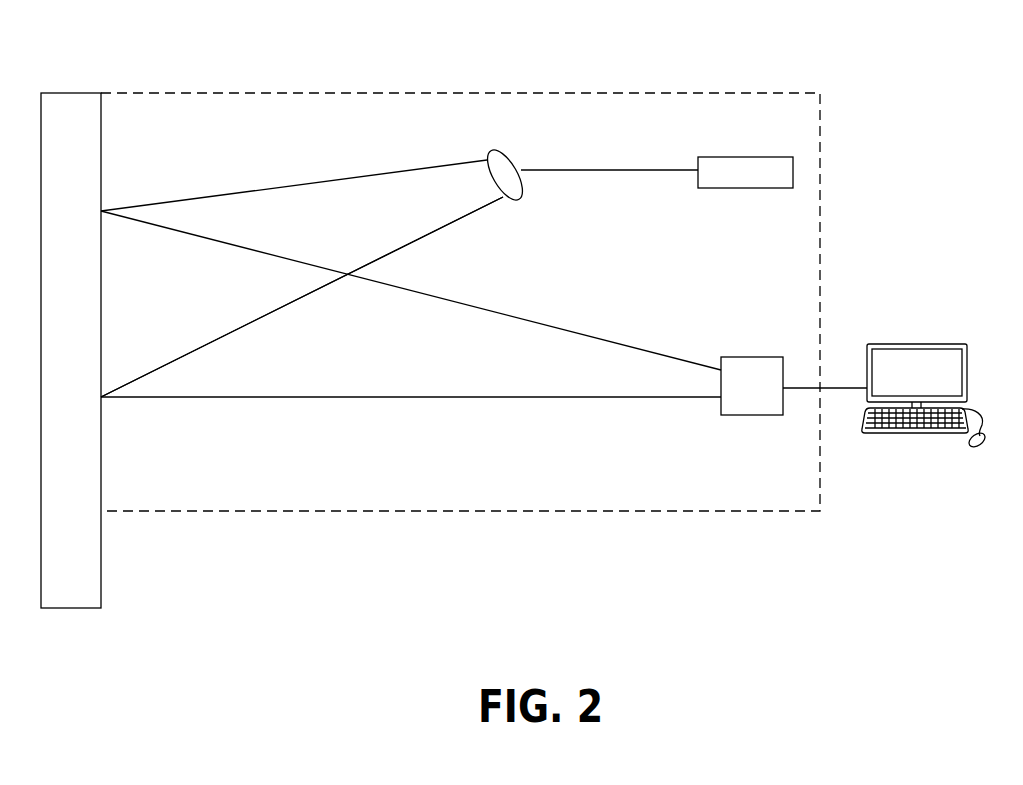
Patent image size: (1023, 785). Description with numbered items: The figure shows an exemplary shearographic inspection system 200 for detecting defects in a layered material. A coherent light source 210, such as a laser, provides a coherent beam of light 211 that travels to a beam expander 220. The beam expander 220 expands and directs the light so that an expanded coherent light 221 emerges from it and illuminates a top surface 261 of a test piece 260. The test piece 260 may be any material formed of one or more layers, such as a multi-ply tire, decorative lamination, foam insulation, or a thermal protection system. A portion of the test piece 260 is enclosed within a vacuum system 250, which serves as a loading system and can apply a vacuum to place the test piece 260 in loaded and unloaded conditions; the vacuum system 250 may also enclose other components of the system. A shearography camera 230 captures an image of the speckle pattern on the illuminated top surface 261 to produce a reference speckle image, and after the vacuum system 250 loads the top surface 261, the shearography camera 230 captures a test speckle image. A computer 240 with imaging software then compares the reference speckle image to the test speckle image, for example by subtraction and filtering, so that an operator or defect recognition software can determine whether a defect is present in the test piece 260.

The shearographic inspection system 200 is at (873, 37).
The coherent light source 210 is at (733, 155).
The coherent beam of light 211 is at (618, 172).
The beam expander 220 is at (513, 160).
The expanded coherent light 221 is at (451, 207).
The shearography camera 230 is at (742, 418).
The computer 240 is at (900, 435).
The vacuum system 250 is at (627, 512).
The test piece 260 is at (68, 608).
The top surface 261 is at (118, 370).